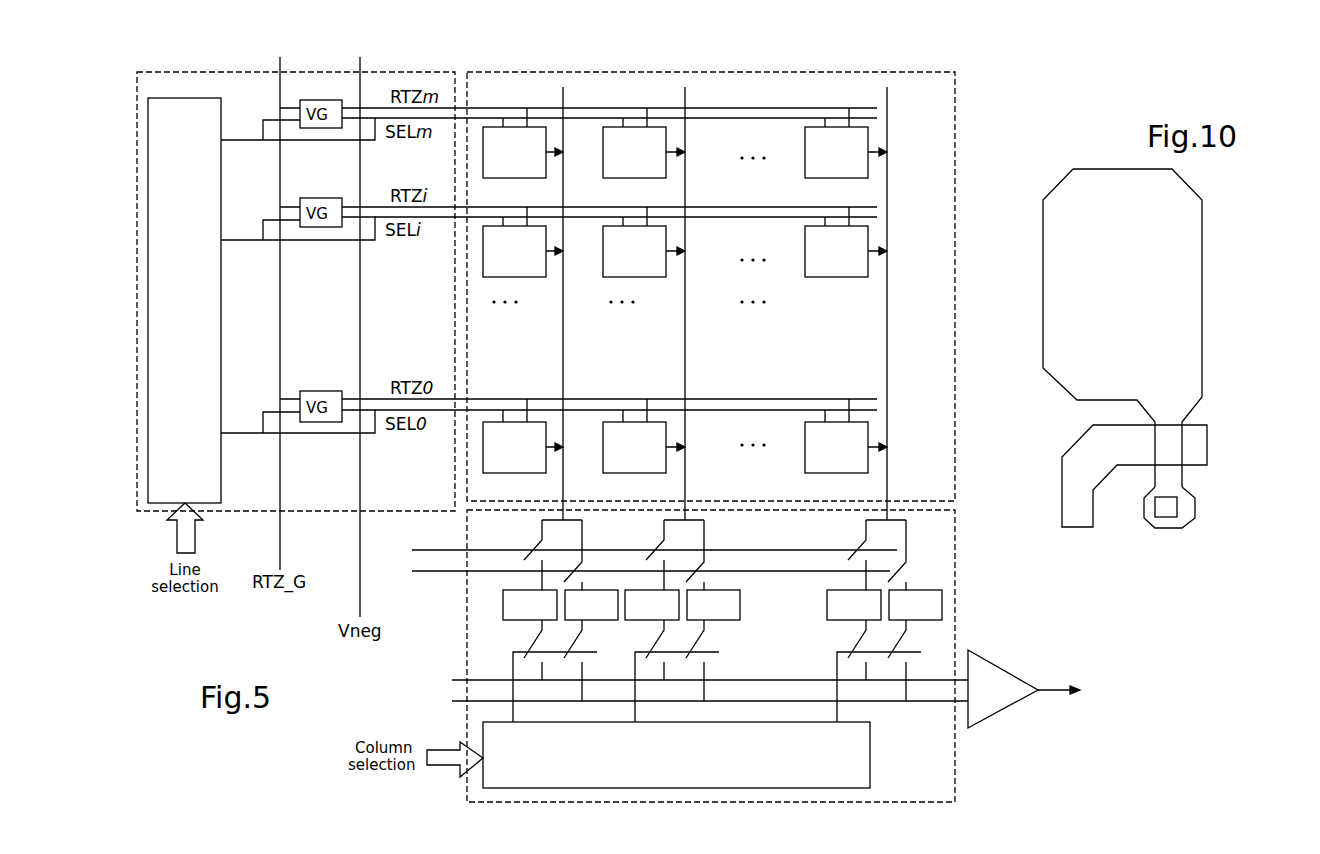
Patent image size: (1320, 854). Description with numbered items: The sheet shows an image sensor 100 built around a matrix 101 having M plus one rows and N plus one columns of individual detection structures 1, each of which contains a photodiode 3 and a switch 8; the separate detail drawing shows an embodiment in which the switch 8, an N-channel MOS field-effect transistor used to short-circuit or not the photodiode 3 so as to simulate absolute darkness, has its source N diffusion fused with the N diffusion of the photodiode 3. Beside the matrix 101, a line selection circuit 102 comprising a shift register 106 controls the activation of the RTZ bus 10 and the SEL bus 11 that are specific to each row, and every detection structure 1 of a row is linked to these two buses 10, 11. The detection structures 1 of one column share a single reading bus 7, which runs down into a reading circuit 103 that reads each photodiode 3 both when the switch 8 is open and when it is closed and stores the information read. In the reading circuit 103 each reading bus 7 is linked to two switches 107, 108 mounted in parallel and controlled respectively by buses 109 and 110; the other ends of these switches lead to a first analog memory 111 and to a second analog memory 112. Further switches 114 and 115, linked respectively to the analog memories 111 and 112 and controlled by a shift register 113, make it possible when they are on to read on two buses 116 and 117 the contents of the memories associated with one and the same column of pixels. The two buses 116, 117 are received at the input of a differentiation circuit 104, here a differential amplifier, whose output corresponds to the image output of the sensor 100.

In FIG. 5, the individual detection structure 1 is at (546, 279).
In FIG. 10, the photodiode 3 is at (1057, 348).
In FIG. 5, the reading bus 7 is at (686, 345).
In FIG. 10, the switch 8 is at (1200, 448).
In FIG. 5, the RTZ bus 10 is at (728, 206).
In FIG. 5, the SEL bus 11 is at (733, 218).
In FIG. 5, the image sensor 100 is at (958, 98).
In FIG. 5, the matrix 101 is at (686, 303).
In FIG. 5, the line selection circuit 102 is at (256, 504).
In FIG. 5, the reading circuit 103 is at (467, 717).
In FIG. 5, the differentiation circuit 104 is at (1012, 656).
In FIG. 5, the shift register 106 is at (221, 277).
In FIG. 5, the first switch 107 is at (661, 542).
In FIG. 5, the second switch 108 is at (708, 565).
In FIG. 5, the control bus 109 is at (443, 548).
In FIG. 5, the control bus 110 is at (419, 575).
In FIG. 5, the first analog memory 111 is at (623, 627).
In FIG. 5, the second analog memory 112 is at (742, 615).
In FIG. 5, the shift register 113 is at (870, 745).
In FIG. 5, the switch 114 is at (538, 646).
In FIG. 5, the switch 115 is at (577, 660).
In FIG. 5, the bus 116 is at (822, 677).
In FIG. 5, the bus 117 is at (878, 703).